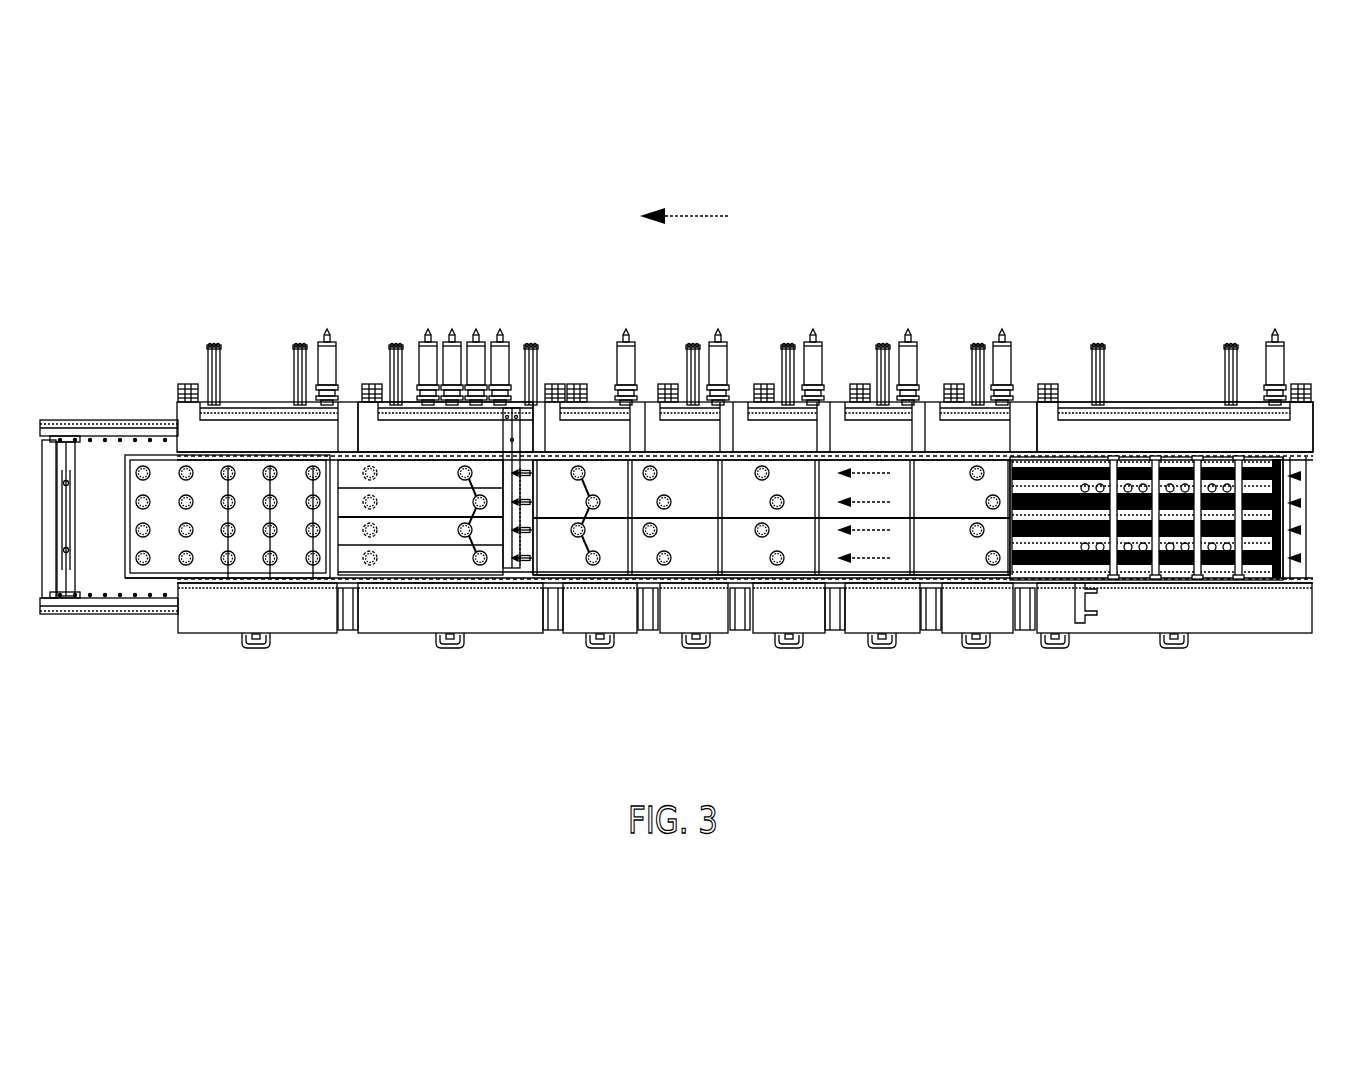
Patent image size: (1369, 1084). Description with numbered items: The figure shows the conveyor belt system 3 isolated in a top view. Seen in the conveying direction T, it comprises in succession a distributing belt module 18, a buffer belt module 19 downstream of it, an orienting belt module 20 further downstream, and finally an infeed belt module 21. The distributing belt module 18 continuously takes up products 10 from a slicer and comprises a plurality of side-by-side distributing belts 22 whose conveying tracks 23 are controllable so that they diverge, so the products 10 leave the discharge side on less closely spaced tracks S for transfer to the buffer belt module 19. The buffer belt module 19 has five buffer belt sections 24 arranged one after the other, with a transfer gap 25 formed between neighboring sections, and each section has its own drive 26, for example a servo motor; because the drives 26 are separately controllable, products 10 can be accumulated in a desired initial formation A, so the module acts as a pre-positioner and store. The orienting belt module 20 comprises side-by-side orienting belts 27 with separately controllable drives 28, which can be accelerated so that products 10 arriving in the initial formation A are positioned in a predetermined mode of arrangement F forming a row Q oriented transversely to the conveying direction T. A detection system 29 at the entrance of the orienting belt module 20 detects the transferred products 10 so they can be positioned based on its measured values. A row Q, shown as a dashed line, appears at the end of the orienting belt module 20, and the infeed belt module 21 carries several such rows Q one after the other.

The conveyor belt system 3 is at (913, 281).
The products 10 is at (984, 470).
The distributing belt module 18 is at (1162, 358).
The buffer belt module 19 is at (759, 298).
The orienting belt module 20 is at (467, 297).
The infeed belt module 21 is at (268, 380).
The distributing belts 22 is at (1305, 478).
The conveying tracks 23 is at (1130, 478).
The buffer belt sections 24 is at (608, 555).
The transfer gap 25 is at (626, 493).
The drive 26 is at (1000, 342).
The orienting belts 27 is at (400, 480).
The drives 28 is at (500, 342).
The detection system 29 is at (505, 574).
The conveying direction T is at (690, 214).
The tracks S is at (872, 498).
The transverse row Q is at (313, 466).
The initial formation A is at (460, 567).
The predetermined mode of arrangement F is at (158, 568).